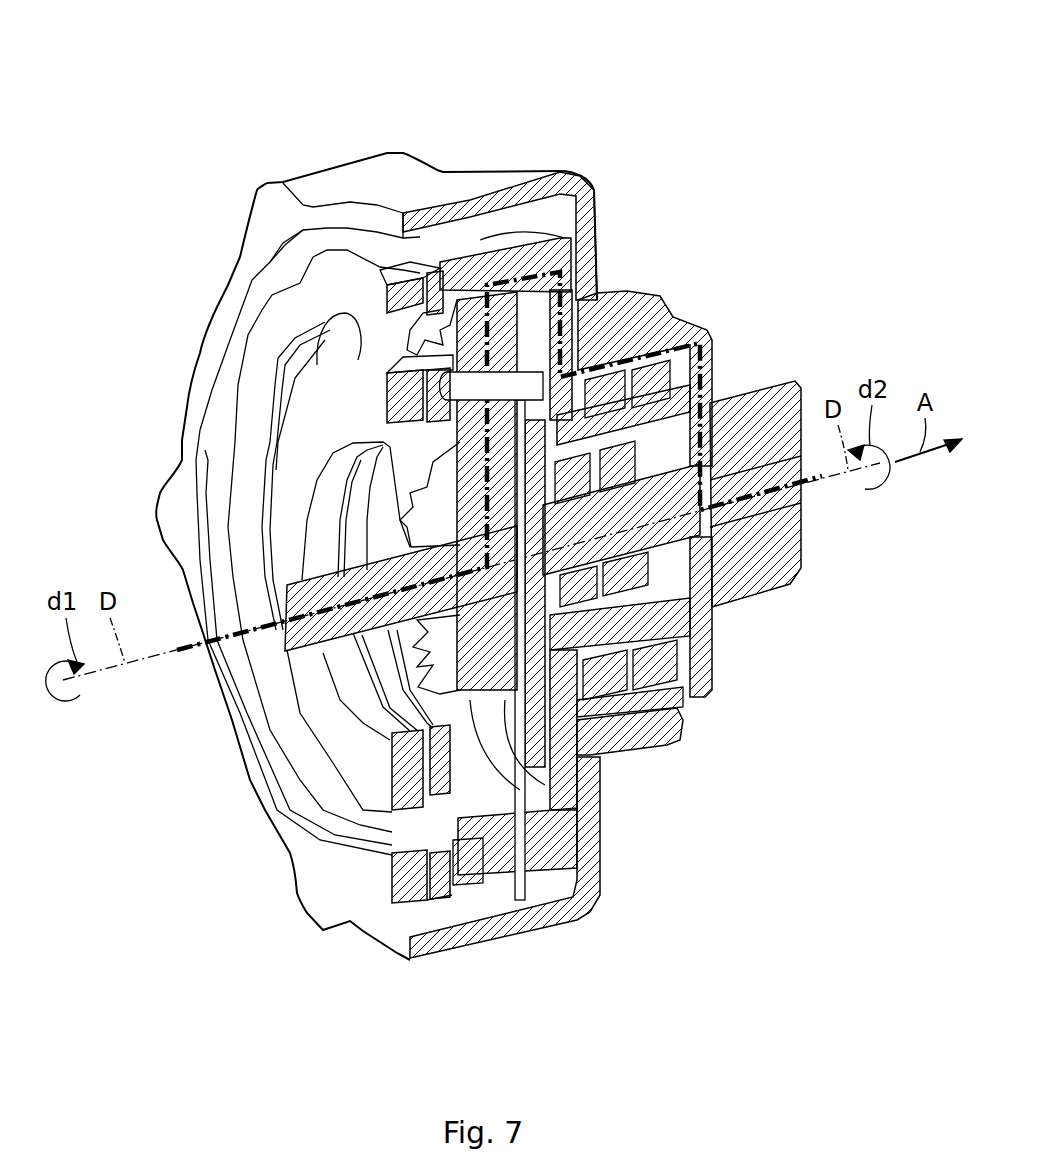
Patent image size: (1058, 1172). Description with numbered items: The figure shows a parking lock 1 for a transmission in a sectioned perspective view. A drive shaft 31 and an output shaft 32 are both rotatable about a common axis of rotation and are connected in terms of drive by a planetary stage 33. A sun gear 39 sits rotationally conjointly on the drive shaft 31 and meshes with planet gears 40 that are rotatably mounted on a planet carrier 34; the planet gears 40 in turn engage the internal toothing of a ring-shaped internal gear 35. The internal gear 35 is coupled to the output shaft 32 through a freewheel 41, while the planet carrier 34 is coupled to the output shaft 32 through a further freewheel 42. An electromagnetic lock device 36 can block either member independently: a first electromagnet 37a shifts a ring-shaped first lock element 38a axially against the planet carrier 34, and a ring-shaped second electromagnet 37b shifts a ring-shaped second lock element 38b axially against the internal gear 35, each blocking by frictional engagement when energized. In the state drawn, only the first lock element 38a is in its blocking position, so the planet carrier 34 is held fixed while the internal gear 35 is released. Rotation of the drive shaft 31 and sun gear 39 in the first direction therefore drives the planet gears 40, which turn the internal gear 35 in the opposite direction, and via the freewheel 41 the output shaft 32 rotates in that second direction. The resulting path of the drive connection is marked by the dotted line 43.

The parking lock 1 is at (755, 168).
The drive shaft 31 is at (310, 630).
The output shaft 32 is at (797, 492).
The planetary stage 33 is at (550, 873).
The planet carrier 34 is at (600, 768).
The internal gear 35 is at (523, 263).
The electromagnetic lock device 36 is at (442, 912).
The first electromagnet 37a is at (407, 790).
The second electromagnet 37b is at (420, 885).
The first lock element 38a is at (472, 860).
The second lock element 38b is at (443, 790).
The sun gear 39 is at (428, 520).
The planet gears 40 is at (477, 337).
The freewheel 41 is at (652, 388).
The freewheel 42 is at (603, 620).
The drive connection course 43 is at (705, 352).